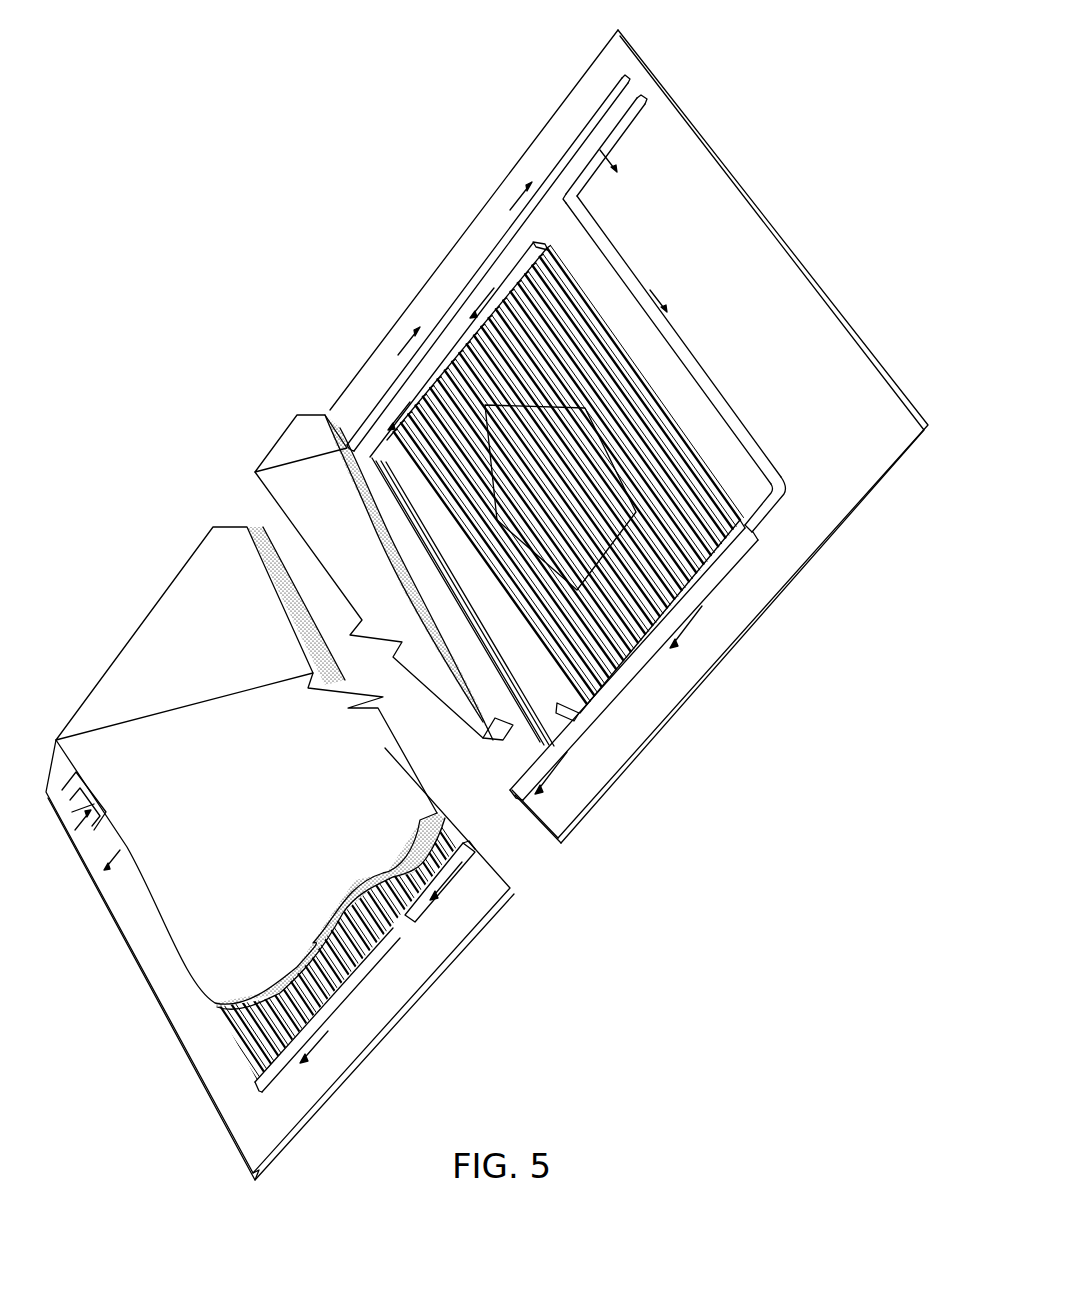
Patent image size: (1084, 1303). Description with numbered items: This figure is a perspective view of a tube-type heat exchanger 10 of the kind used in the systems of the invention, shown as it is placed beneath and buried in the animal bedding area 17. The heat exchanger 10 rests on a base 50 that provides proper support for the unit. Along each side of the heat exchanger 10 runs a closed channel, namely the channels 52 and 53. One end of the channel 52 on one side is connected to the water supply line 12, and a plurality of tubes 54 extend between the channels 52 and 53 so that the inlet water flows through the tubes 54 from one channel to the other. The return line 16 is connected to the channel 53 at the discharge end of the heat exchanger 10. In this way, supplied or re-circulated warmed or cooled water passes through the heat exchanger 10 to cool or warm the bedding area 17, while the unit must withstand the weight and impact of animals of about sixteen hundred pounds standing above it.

The heat exchanger 10 is at (607, 657).
The water supply line 12 is at (600, 140).
The return line 16 is at (607, 84).
The animal bedding area 17 is at (330, 935).
The base 50 is at (882, 438).
The closed channel 52 is at (600, 710).
The closed channel 53 is at (455, 343).
The tubes 54 is at (693, 558).